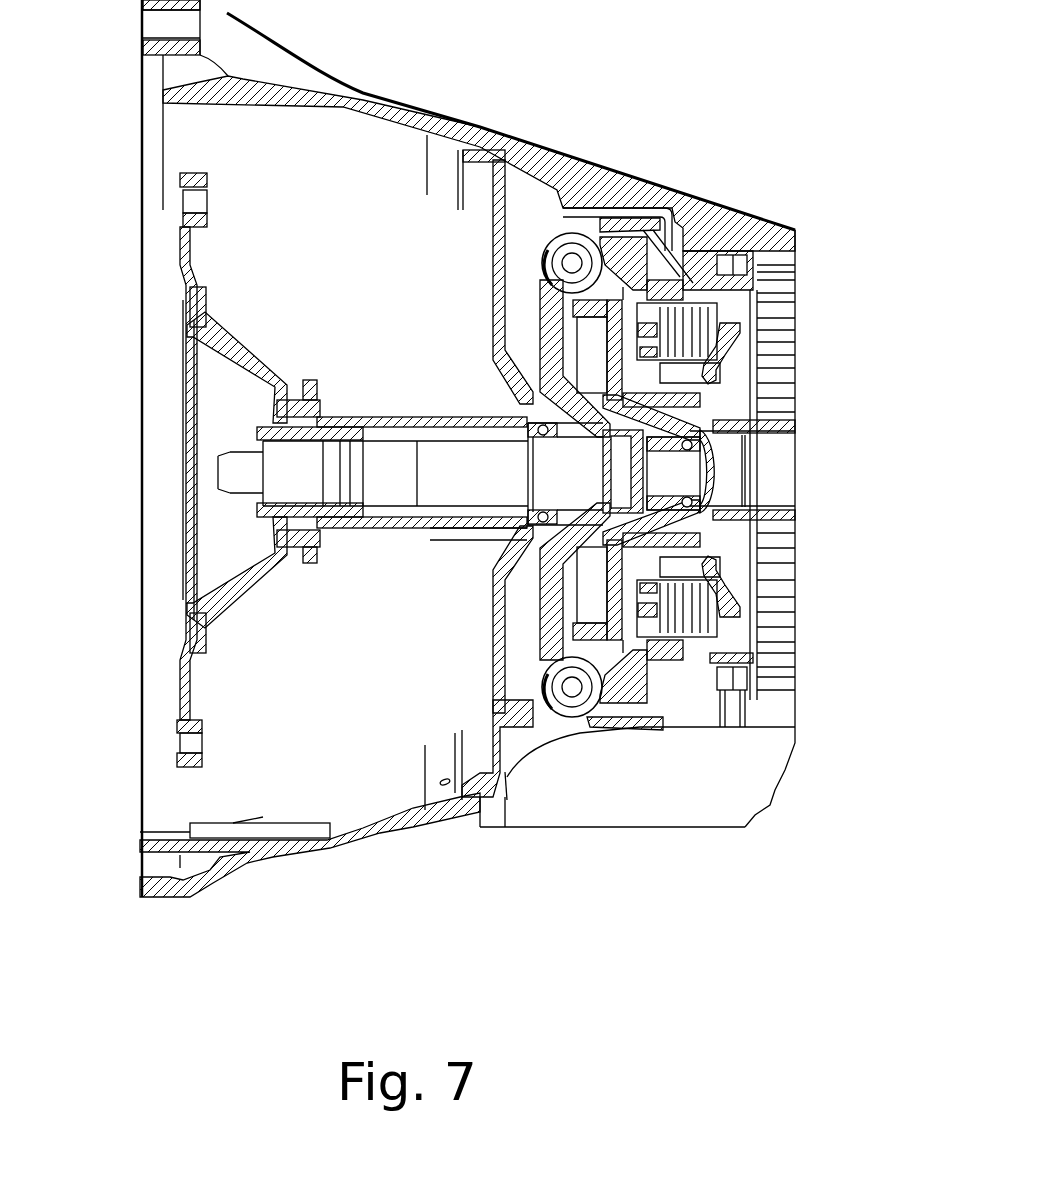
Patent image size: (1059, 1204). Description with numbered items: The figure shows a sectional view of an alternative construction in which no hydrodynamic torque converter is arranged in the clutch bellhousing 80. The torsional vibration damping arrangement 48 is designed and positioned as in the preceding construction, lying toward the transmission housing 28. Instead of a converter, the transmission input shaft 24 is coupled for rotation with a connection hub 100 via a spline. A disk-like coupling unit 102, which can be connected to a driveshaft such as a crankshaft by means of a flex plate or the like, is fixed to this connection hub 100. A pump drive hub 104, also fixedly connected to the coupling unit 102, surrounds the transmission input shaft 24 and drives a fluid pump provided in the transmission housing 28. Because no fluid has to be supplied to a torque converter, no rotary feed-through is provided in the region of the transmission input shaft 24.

The clutch bellhousing 80 is at (393, 101).
The torsional vibration damping arrangement 48 is at (545, 210).
The transmission housing 28 is at (727, 210).
The disk-like coupling unit 102 is at (178, 259).
The connection hub 100 is at (257, 430).
The transmission input shaft 24 is at (390, 468).
The pump drive hub 104 is at (407, 530).